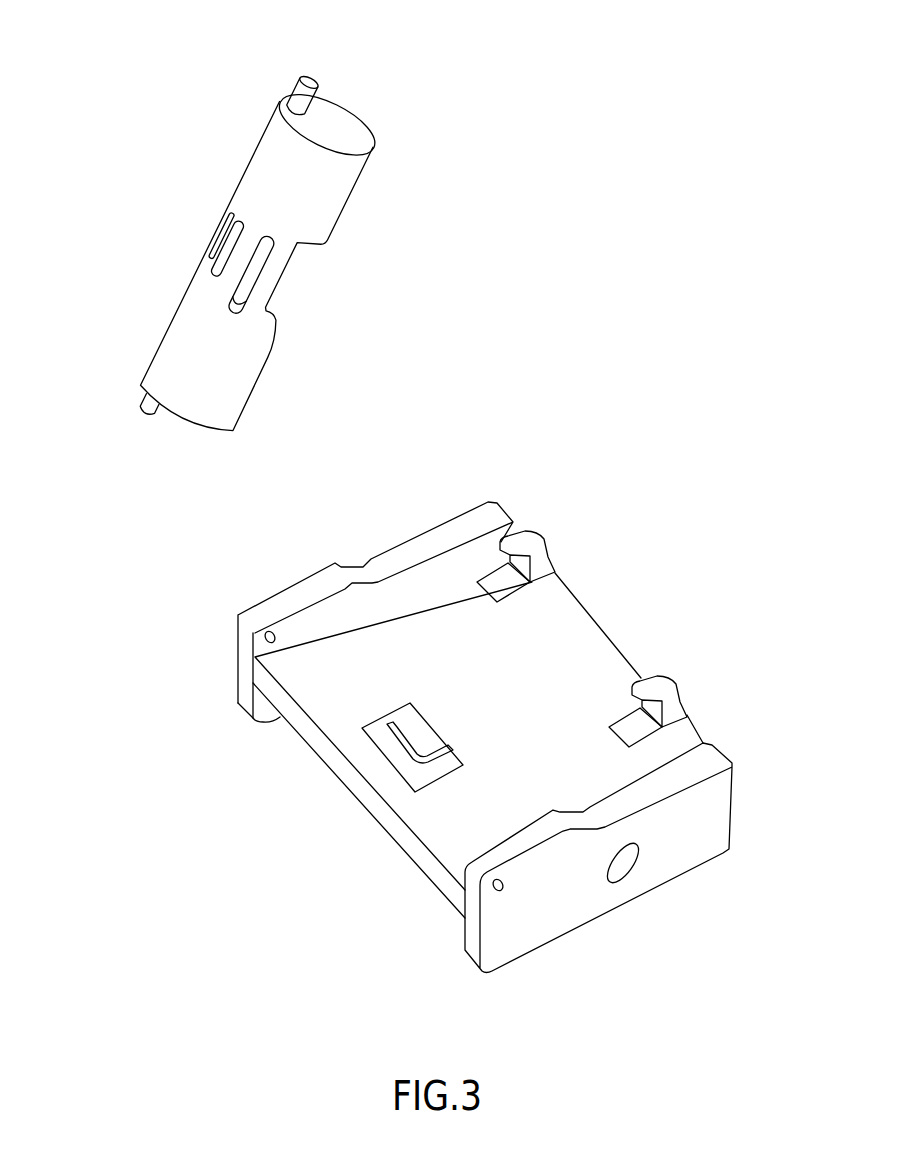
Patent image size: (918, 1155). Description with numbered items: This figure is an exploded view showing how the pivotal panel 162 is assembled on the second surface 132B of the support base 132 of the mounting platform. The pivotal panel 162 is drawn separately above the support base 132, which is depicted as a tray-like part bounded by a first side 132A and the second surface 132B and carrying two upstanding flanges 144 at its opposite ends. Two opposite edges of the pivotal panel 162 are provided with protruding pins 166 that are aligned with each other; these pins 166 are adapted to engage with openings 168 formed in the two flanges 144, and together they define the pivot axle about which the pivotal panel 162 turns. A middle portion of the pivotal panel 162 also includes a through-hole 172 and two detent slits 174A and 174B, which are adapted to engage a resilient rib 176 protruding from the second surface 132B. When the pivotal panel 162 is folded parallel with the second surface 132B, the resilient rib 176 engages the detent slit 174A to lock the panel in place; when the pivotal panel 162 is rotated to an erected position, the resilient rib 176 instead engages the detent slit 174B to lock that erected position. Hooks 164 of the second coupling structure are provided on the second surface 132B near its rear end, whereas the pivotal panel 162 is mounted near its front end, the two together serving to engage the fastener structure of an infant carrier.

The support base 132 is at (418, 852).
The first side of tray 132A is at (288, 729).
The second surface 132B is at (587, 633).
The flanges 144 is at (475, 517).
The pivotal panel 162 is at (260, 172).
The hooks 164 is at (532, 542).
The protruding pins 166 is at (309, 83).
The openings 168 is at (271, 643).
The through-hole 172 is at (247, 280).
The detent slit 174A is at (226, 220).
The detent slit 174B is at (217, 263).
The resilient rib 176 is at (382, 747).